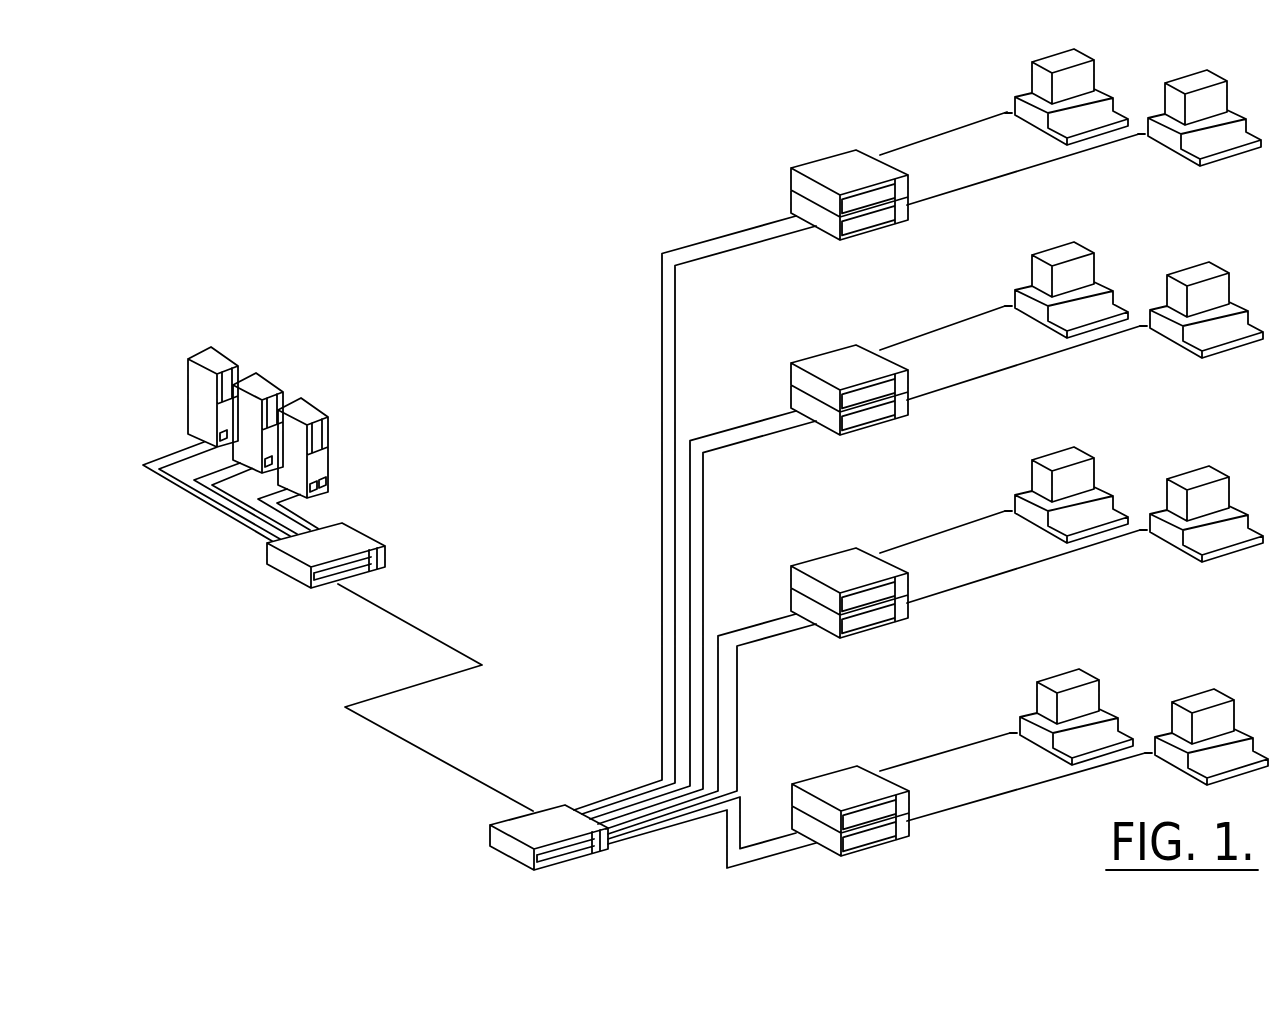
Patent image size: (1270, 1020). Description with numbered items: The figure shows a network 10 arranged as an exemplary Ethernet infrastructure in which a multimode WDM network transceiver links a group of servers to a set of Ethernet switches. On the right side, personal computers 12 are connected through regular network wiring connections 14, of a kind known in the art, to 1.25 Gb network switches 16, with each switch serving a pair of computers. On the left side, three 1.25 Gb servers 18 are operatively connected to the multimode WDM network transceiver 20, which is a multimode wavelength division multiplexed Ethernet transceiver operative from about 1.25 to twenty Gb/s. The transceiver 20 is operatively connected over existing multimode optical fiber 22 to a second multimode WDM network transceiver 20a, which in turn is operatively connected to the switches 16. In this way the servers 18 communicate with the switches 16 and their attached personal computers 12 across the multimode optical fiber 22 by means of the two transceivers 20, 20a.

The network 10 is at (465, 258).
The personal computers 12 is at (1075, 58).
The network wiring connections 14 is at (977, 189).
The switches 16 is at (847, 168).
The servers 18 is at (218, 358).
The multimode WDM network transceiver 20 is at (364, 547).
The second multimode WDM network transceiver 20a is at (563, 808).
The multimode optical fiber 22 is at (445, 641).